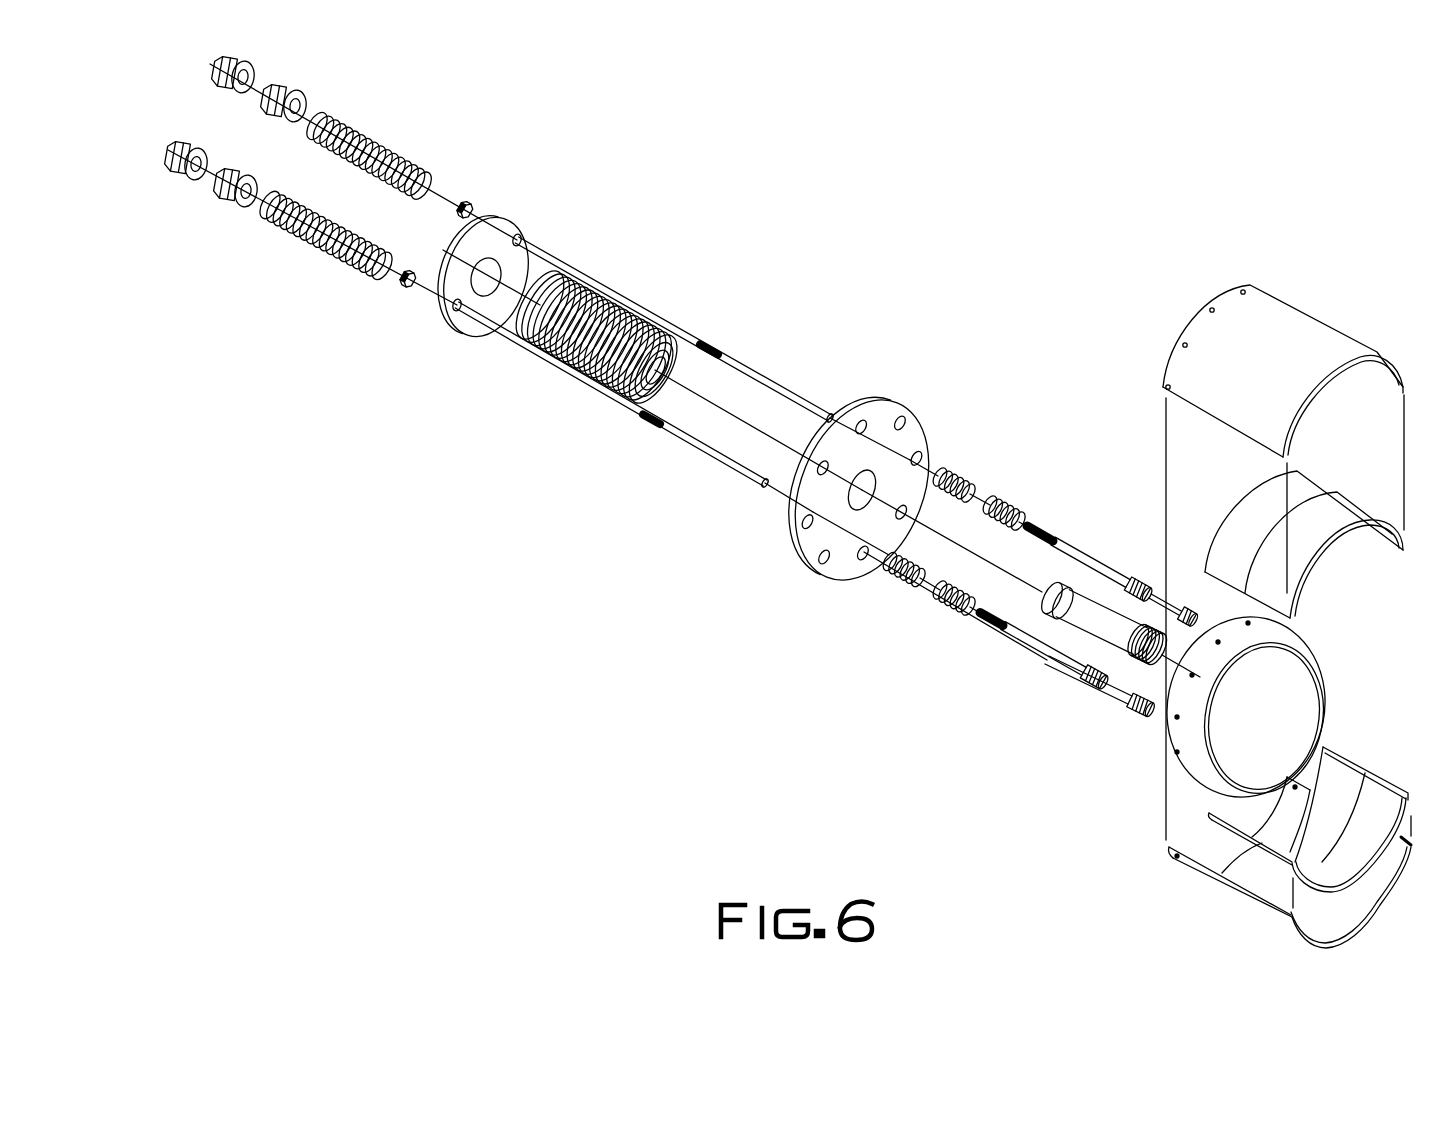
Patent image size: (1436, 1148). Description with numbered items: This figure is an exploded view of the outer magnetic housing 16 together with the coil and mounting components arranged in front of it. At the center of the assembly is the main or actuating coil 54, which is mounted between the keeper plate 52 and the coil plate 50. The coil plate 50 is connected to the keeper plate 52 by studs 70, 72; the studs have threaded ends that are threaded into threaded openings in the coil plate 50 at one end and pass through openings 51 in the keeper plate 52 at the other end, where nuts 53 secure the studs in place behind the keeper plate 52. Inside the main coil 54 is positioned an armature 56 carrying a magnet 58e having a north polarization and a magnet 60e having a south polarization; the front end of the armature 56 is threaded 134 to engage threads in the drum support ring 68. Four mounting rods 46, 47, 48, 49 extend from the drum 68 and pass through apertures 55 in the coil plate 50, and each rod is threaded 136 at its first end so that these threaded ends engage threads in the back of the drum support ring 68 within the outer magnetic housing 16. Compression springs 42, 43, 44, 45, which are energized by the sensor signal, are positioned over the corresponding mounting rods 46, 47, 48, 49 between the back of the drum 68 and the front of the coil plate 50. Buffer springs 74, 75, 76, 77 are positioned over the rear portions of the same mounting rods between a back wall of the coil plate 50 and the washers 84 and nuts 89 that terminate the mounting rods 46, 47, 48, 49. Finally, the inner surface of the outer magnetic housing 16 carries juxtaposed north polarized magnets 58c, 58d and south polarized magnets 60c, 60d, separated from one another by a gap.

The outer magnetic housing 16 is at (1302, 312).
The compression spring 42 is at (963, 480).
The compression spring 43 is at (894, 590).
The compression spring 44 is at (944, 614).
The compression spring 45 is at (1014, 506).
The mounting rod 46 is at (1076, 545).
The mounting rod 47 is at (1016, 645).
The mounting rod 48 is at (1116, 712).
The mounting rod 49 is at (1178, 604).
The coil plate 50 is at (896, 399).
The openings 51 is at (519, 236).
The keeper plate 52 is at (512, 218).
The nuts 53 is at (467, 202).
The main coil 54 is at (546, 270).
The apertures 55 is at (918, 430).
The armature 56 is at (1110, 637).
The north polarized magnet 58c is at (1330, 551).
The north polarized magnet 58d is at (1343, 750).
The north polarization magnet 58e is at (1122, 578).
The south polarized magnet 60c is at (1384, 773).
The south polarized magnet 60d is at (1243, 490).
The south polarization magnet 60e is at (1056, 630).
The drum support ring 68 is at (1277, 665).
The stud 70 is at (757, 375).
The stud 72 is at (708, 452).
The buffer spring 74 is at (353, 275).
The buffer spring 75 is at (283, 238).
The buffer spring 76 is at (425, 166).
The buffer spring 77 is at (345, 120).
The washers 84 is at (240, 62).
The nuts 89 is at (234, 92).
The threaded front end 134 is at (1097, 700).
The threaded ends 136 is at (1147, 715).